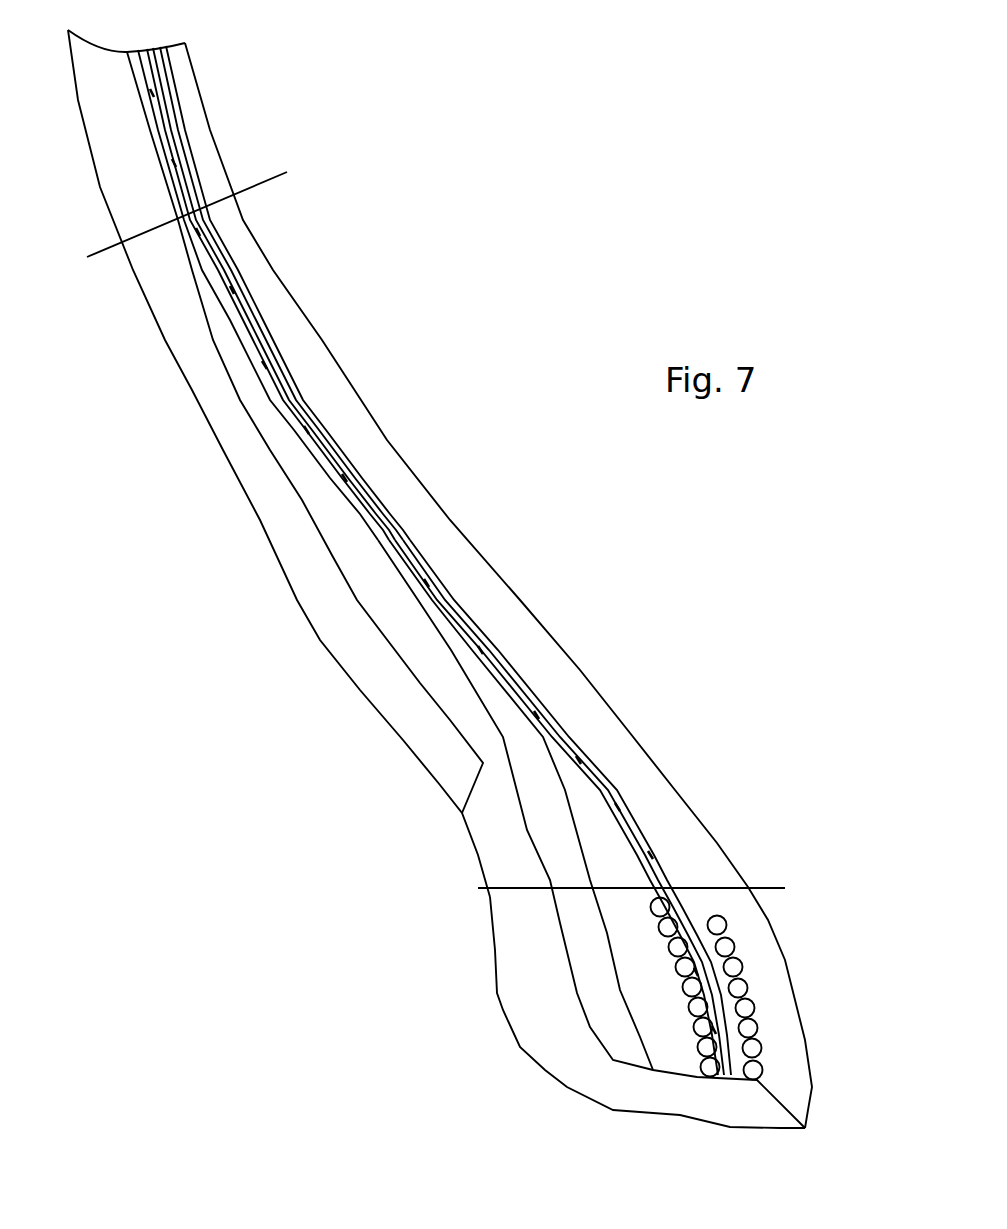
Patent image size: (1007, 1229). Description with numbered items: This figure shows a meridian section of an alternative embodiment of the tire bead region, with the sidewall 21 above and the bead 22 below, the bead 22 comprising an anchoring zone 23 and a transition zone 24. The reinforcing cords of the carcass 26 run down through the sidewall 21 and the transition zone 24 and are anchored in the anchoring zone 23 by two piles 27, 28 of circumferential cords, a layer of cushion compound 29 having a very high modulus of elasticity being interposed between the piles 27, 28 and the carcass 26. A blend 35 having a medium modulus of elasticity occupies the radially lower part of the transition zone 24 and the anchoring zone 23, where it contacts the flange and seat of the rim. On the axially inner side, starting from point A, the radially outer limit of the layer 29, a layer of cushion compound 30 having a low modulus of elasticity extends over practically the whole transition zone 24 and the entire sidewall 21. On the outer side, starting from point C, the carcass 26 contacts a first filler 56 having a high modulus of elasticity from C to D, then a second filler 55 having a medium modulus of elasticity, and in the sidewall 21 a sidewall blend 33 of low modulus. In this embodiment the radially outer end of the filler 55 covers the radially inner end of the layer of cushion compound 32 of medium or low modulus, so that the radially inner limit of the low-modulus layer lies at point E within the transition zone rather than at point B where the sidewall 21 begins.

The sidewall 21 is at (252, 89).
The bead 22 is at (455, 914).
The anchoring zone 23 is at (465, 962).
The transition zone 24 is at (272, 585).
The carcass 26 is at (370, 514).
The pile of circumferential cords 27 is at (755, 1010).
The pile of circumferential cords 28 is at (698, 1053).
The layer of cushion compound having a very high modulus of elasticity 29 is at (693, 908).
The layer of cushion compound having a low modulus of elasticity 30 is at (360, 477).
The layer of cushion compound having a medium or low modulus of elasticity 32 is at (167, 177).
The sidewall blend 33 is at (165, 293).
The blend having a medium modulus of elasticity 35 is at (520, 987).
The second filler 55 is at (402, 620).
The first filler 56 is at (500, 705).
The point A is at (673, 877).
The point B is at (177, 221).
The point C is at (647, 863).
The point D is at (383, 532).
The point E is at (253, 352).